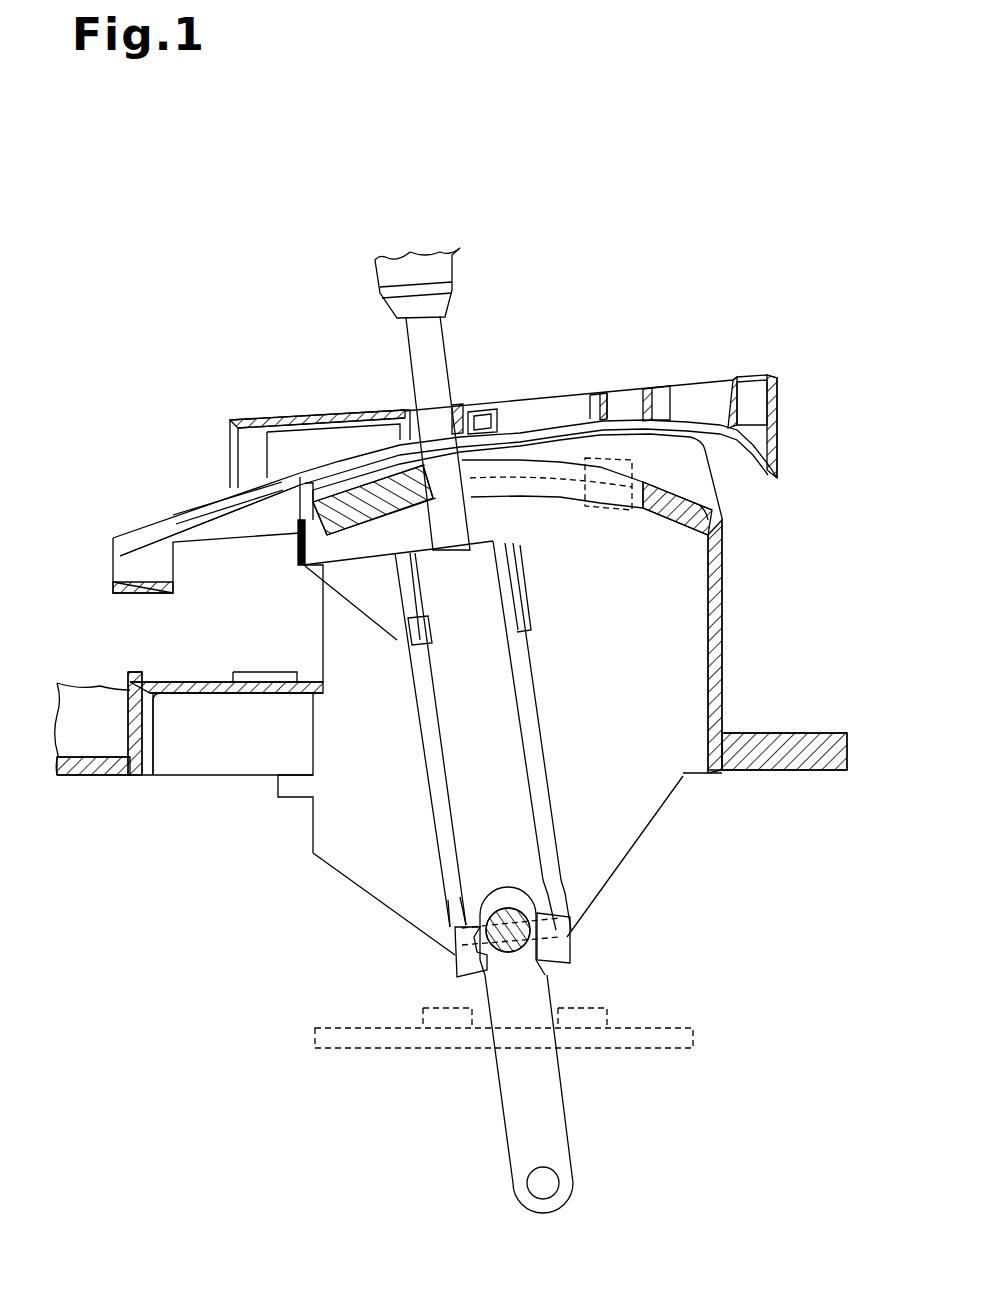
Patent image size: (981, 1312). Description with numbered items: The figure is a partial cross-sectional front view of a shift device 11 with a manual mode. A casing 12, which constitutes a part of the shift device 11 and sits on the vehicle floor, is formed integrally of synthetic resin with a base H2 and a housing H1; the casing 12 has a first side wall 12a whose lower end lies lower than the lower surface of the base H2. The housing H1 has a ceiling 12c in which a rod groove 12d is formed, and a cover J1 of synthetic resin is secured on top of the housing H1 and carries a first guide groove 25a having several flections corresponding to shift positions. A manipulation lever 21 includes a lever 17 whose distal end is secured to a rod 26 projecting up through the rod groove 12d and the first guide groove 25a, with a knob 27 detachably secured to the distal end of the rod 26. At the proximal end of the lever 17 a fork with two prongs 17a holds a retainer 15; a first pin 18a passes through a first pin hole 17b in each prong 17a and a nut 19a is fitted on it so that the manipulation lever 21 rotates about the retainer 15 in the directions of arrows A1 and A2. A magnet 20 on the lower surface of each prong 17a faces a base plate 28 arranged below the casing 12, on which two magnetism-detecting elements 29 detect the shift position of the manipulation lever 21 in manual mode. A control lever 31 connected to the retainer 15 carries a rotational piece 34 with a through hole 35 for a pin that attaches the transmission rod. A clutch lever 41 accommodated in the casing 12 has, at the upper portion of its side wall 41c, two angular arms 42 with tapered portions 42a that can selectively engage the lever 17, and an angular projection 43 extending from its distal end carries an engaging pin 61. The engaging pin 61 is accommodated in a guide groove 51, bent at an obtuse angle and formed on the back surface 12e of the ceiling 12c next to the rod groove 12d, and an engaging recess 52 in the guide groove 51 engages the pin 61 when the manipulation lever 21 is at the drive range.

The shift device 11 is at (814, 340).
The casing 12 is at (723, 572).
The first side wall 12a is at (617, 858).
The ceiling 12c is at (694, 534).
The rod groove 12d is at (636, 510).
The back surface 12e is at (530, 500).
The retainer 15 is at (506, 898).
The lever 17 is at (418, 698).
The prongs 17a is at (446, 900).
The first pin hole 17b is at (565, 972).
The first pin 18a is at (571, 925).
The nut 19a is at (454, 960).
The magnet 20 is at (511, 956).
The manipulation lever 21 is at (372, 266).
The first guide groove 25a is at (642, 396).
The rod 26 is at (435, 338).
The knob 27 is at (445, 272).
The base plate 28 is at (672, 1050).
The magnetism-detecting elements 29 is at (415, 1020).
The control lever 31 is at (548, 1078).
The rotational piece 34 is at (560, 1118).
The through hole 35 is at (545, 1190).
The clutch lever 41 is at (525, 655).
The side wall 41c is at (530, 690).
The angular arms 42 is at (412, 630).
The tapered portion 42a is at (492, 586).
The angular projection 43 is at (318, 575).
The guide groove 51 is at (590, 462).
The engaging recess 52 is at (635, 472).
The engaging pin 61 is at (303, 547).
The rotation direction arrow A1 is at (670, 282).
The rotation direction arrow A2 is at (205, 325).
The housing H1 is at (714, 520).
The base H2 is at (832, 735).
The cover J1 is at (345, 408).